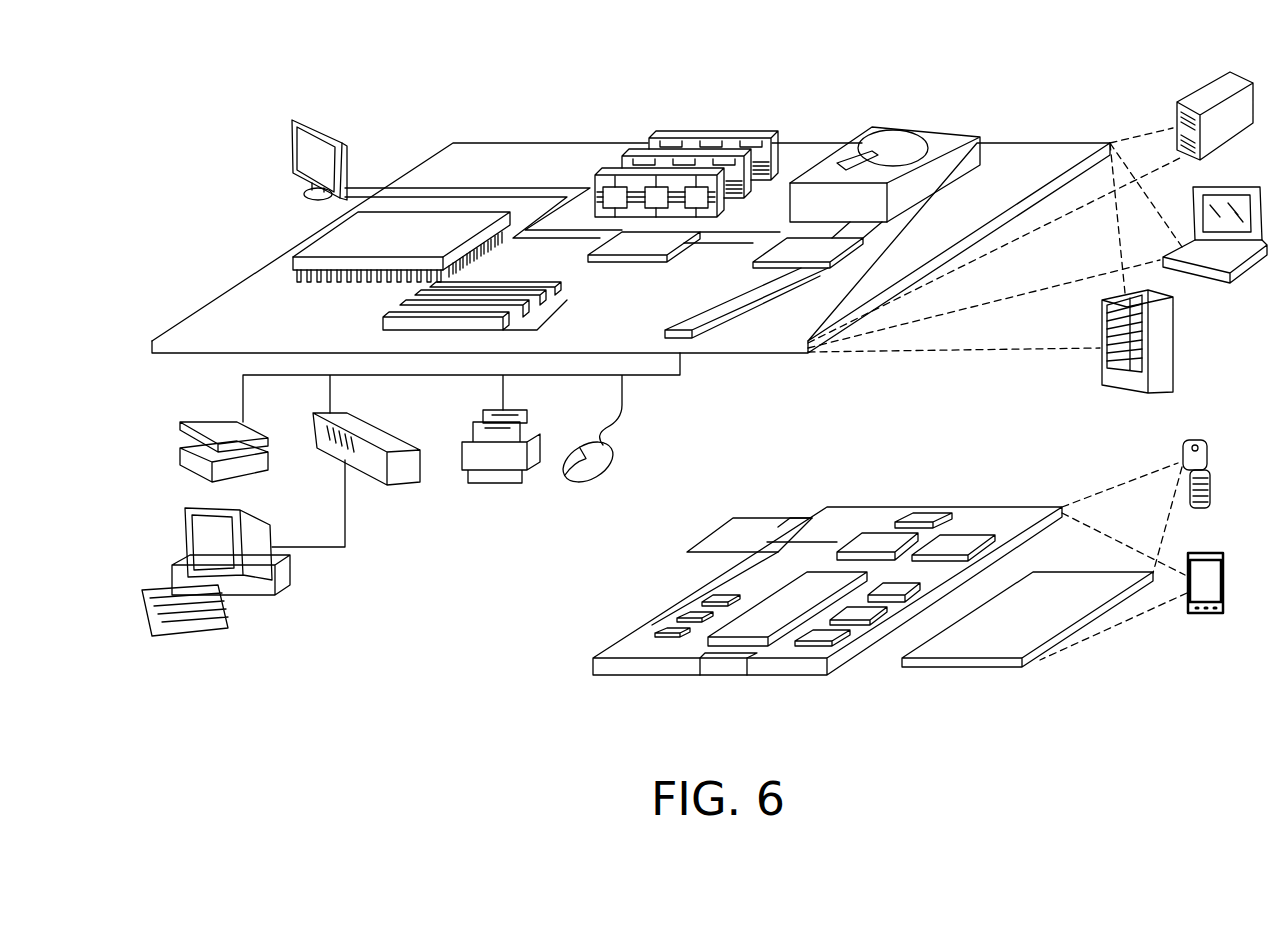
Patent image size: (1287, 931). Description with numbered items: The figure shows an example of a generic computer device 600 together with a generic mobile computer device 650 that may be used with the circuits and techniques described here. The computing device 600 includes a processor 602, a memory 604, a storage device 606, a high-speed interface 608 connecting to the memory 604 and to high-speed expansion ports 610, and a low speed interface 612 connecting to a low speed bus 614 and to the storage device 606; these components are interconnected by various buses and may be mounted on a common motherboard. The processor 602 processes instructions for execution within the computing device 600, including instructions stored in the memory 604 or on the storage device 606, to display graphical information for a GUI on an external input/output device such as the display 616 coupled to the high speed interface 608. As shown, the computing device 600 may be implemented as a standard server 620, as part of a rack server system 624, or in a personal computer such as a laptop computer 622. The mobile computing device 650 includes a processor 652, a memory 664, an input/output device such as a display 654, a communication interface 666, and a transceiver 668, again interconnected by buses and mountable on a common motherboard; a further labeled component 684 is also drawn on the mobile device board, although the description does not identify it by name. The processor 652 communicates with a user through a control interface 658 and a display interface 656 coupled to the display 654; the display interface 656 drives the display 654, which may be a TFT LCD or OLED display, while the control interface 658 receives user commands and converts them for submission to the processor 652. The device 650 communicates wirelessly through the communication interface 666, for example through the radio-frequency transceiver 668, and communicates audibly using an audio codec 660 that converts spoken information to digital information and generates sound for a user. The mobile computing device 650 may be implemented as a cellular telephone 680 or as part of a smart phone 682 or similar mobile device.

The computing device 600 is at (409, 97).
The processor 602 is at (316, 235).
The memory 604 is at (715, 137).
The storage device 606 is at (922, 122).
The high-speed interface 608 is at (656, 244).
The high-speed expansion ports 610 is at (405, 302).
The low speed interface 612 is at (783, 246).
The low speed bus 614 is at (682, 330).
The display 616 is at (297, 115).
The standard server 620 is at (1195, 97).
The laptop computer 622 is at (1242, 185).
The rack server system 624 is at (1175, 343).
The mobile computer device 650 is at (1097, 664).
The processor 652 is at (758, 615).
The display 654 is at (1062, 585).
The display interface 656 is at (830, 634).
The control interface 658 is at (862, 613).
The audio codec 660 is at (903, 590).
The memory 664 is at (687, 623).
The communication interface 666 is at (878, 542).
The transceiver 668 is at (960, 545).
The cellular telephone 680 is at (920, 515).
The smart phone 682 is at (808, 518).
The expansion port 684 is at (733, 518).